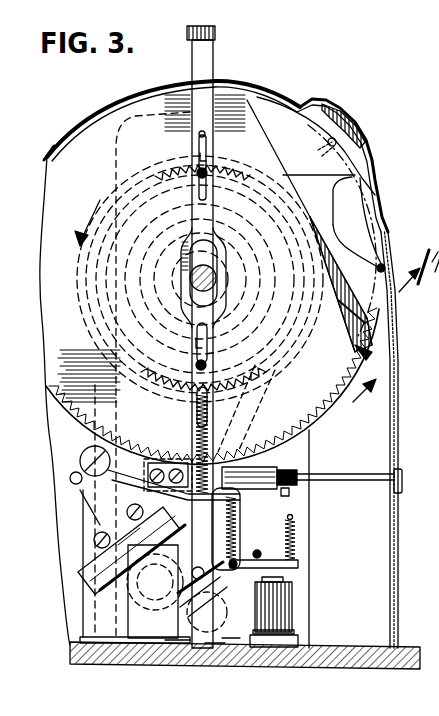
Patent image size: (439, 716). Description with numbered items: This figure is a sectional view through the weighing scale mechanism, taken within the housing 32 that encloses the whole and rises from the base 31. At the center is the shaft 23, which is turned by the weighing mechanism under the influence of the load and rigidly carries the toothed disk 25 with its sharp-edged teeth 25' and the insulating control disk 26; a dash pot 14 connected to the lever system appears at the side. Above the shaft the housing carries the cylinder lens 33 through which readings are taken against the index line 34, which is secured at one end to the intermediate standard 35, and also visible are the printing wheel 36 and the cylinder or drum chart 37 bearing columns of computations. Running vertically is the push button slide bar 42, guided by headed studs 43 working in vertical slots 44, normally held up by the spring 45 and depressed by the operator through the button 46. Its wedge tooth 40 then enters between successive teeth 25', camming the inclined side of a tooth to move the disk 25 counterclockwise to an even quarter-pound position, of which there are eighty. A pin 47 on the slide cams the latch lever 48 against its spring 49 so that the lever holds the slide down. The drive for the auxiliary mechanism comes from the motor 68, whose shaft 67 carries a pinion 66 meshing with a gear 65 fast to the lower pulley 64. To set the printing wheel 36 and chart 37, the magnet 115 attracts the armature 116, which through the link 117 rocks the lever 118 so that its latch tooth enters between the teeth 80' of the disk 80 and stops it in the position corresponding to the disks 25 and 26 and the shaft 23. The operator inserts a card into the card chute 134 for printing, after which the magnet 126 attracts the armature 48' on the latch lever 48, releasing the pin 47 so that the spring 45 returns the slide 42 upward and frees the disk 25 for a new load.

The dash pot 14 is at (419, 271).
The shaft 23 is at (196, 282).
The toothed disk 25 is at (208, 278).
The teeth 25' is at (212, 294).
The control disk 26 is at (343, 350).
The base 31 is at (333, 670).
The housing 32 is at (399, 545).
The cylinder lens 33 is at (353, 128).
The index line 34 is at (323, 141).
The intermediate standard 35 is at (273, 128).
The printing wheel 36 is at (355, 272).
The cylinder or drum chart 37 is at (366, 224).
The wedge tooth 40 is at (205, 136).
The push button slide bar 42 is at (212, 83).
The headed studs 43 is at (199, 177).
The vertical slots 44 is at (207, 161).
The spring 45 is at (226, 408).
The button 46 is at (217, 36).
The pin 47 is at (236, 447).
The latch lever 48 is at (242, 529).
The armature 48' is at (263, 549).
The spring 49 is at (297, 544).
The lower pulley 64 is at (100, 618).
The gear 65 is at (100, 556).
The pinion 66 is at (228, 652).
The shaft 67 is at (221, 655).
The motor 68 is at (175, 655).
The disk 80 is at (382, 313).
The teeth 80' is at (351, 415).
The magnet 115 is at (103, 593).
The armature 116 is at (103, 566).
The link 117 is at (100, 505).
The lever 118 is at (134, 474).
The magnet 126 is at (295, 605).
The card chute 134 is at (345, 478).